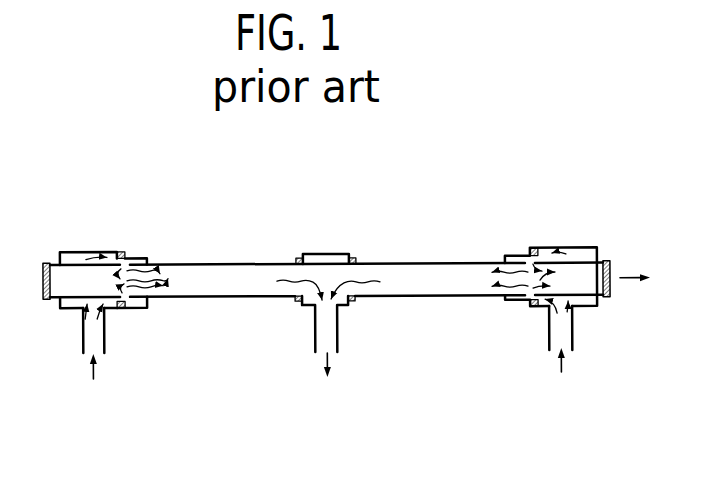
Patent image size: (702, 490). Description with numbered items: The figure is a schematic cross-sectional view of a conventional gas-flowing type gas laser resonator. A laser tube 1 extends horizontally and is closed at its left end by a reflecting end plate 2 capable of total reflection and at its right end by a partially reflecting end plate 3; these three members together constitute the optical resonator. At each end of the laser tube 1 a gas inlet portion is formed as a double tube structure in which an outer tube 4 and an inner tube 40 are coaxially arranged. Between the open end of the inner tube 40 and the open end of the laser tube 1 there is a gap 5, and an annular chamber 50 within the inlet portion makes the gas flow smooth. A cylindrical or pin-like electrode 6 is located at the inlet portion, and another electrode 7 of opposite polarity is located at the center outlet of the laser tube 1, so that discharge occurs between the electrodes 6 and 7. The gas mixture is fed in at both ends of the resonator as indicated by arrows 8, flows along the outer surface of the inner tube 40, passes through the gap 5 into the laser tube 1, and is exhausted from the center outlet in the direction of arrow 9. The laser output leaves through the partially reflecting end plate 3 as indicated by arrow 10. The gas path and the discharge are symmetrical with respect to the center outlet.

The laser tube 1 is at (243, 263).
The reflecting end plate 2 is at (44, 269).
The partially reflecting end plate 3 is at (610, 269).
The outer tube 4 is at (77, 251).
The gap 5 is at (124, 258).
The annular chamber 50 is at (145, 258).
The electrode 6 is at (122, 308).
The electrode 7 is at (302, 302).
The arrow 8 is at (96, 372).
The arrow 9 is at (330, 360).
The arrow 10 is at (628, 282).
The inner tube 40 is at (78, 306).